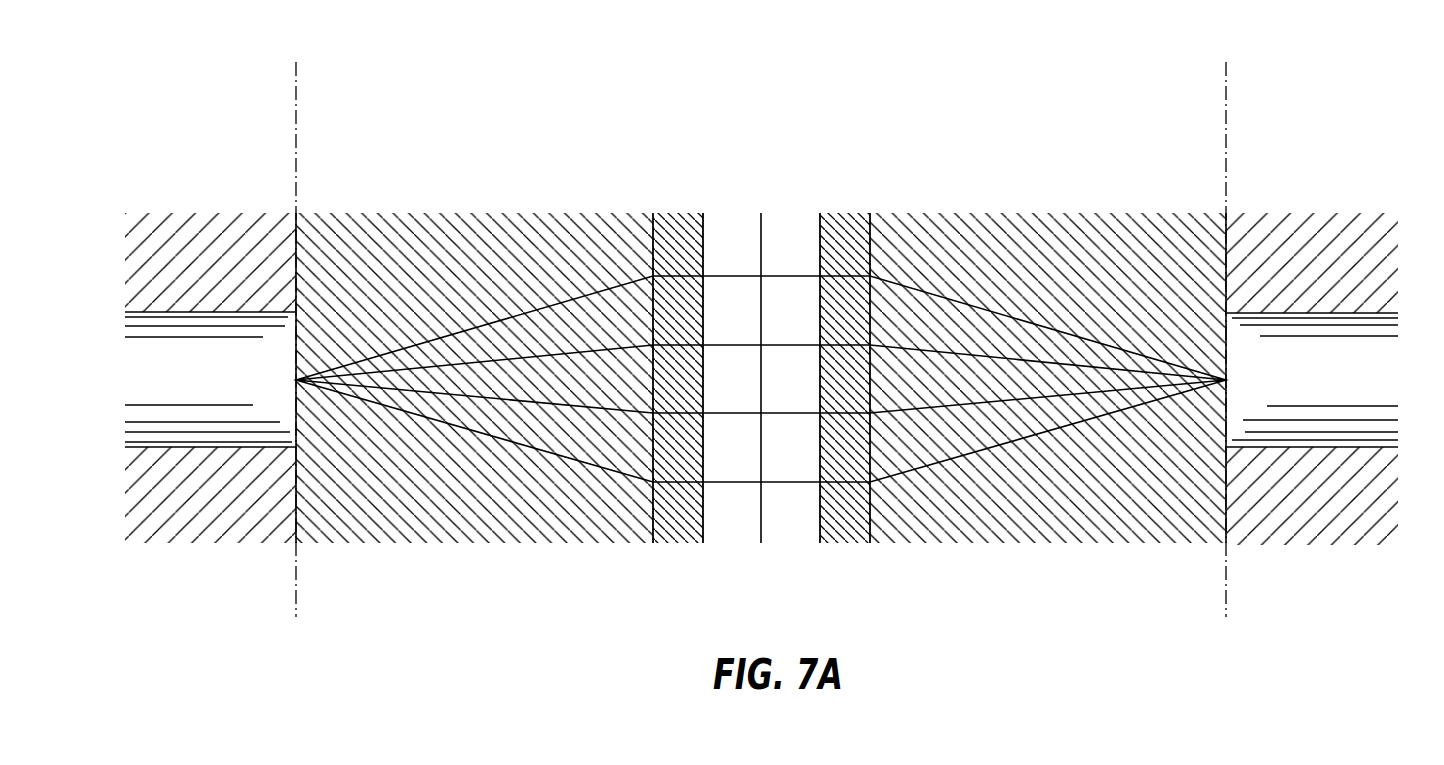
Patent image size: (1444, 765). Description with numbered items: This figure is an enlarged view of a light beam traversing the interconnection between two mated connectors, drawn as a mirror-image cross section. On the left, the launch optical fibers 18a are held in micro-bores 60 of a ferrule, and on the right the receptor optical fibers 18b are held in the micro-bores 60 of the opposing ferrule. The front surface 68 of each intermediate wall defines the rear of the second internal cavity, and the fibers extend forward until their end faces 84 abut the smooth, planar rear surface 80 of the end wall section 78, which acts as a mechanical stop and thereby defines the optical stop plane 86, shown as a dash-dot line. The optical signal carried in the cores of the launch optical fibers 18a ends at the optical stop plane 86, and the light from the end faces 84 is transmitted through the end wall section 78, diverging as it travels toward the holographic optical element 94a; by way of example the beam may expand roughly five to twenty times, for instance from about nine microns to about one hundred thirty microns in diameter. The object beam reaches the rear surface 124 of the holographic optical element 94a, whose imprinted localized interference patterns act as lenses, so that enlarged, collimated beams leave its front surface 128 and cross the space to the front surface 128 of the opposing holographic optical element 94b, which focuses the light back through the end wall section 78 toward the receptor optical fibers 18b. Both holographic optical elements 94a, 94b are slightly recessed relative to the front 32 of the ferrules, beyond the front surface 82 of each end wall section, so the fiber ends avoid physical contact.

The launch optical fibers 18a is at (143, 311).
The receptor optical fibers 18b is at (1378, 311).
The front of the ferrule 32 is at (761, 525).
The micro-bores 60 is at (143, 447).
The front surface of the intermediate wall 68 is at (298, 245).
The end wall section 78 is at (482, 213).
The rear surface 80 is at (296, 238).
The front surface 82 is at (653, 527).
The end faces 84 is at (298, 420).
The optical stop plane 86 is at (296, 97).
The holographic optical element 94a is at (680, 224).
The holographic optical element 94b is at (843, 218).
The rear surface of the holographic optical element 124 is at (650, 238).
The front surface of the holographic optical element 128 is at (703, 237).